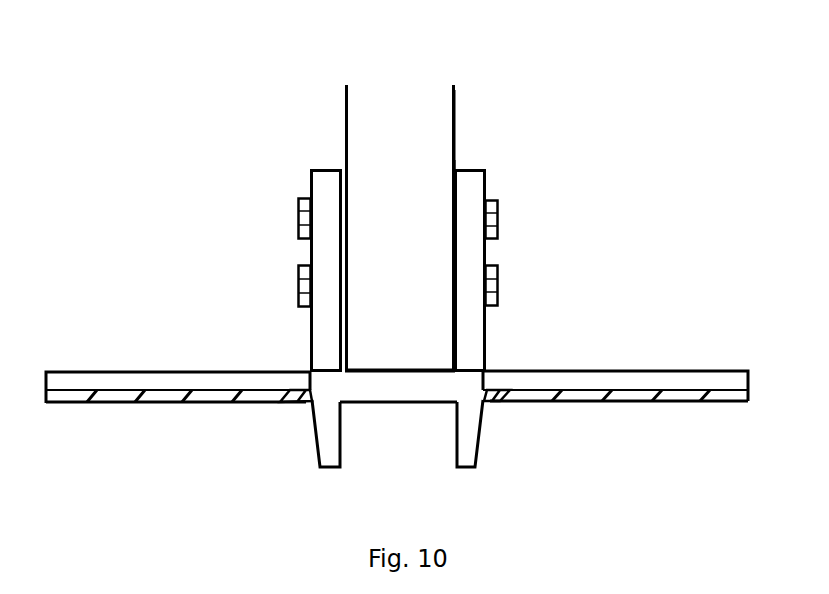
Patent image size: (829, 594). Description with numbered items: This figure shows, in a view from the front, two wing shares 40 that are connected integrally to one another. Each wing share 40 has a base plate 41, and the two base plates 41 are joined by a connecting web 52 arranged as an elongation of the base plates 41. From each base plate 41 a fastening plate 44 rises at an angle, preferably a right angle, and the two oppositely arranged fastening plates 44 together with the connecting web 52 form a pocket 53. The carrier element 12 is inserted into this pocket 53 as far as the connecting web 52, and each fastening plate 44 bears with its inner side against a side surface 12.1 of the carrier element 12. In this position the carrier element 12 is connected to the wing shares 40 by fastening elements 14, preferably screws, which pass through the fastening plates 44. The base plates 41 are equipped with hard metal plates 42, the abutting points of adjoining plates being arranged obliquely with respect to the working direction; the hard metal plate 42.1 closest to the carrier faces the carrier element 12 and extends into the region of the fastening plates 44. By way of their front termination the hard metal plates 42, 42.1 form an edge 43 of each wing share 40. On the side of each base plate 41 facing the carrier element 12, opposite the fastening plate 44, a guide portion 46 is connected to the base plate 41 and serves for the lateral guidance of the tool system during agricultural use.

The carrier element 12 is at (423, 100).
The side surface 12.1 is at (455, 130).
The pocket 53 is at (461, 166).
The fastening plate 44 is at (325, 187).
The fastening elements 14 is at (297, 220).
The wing share 40 is at (685, 210).
The base plate 41 is at (237, 378).
The hard metal plates 42 is at (112, 398).
The hard metal plate close to the carrier 42.1 is at (300, 395).
The edge 43 is at (200, 405).
The guide portion 46 is at (323, 445).
The connecting web 52 is at (395, 390).